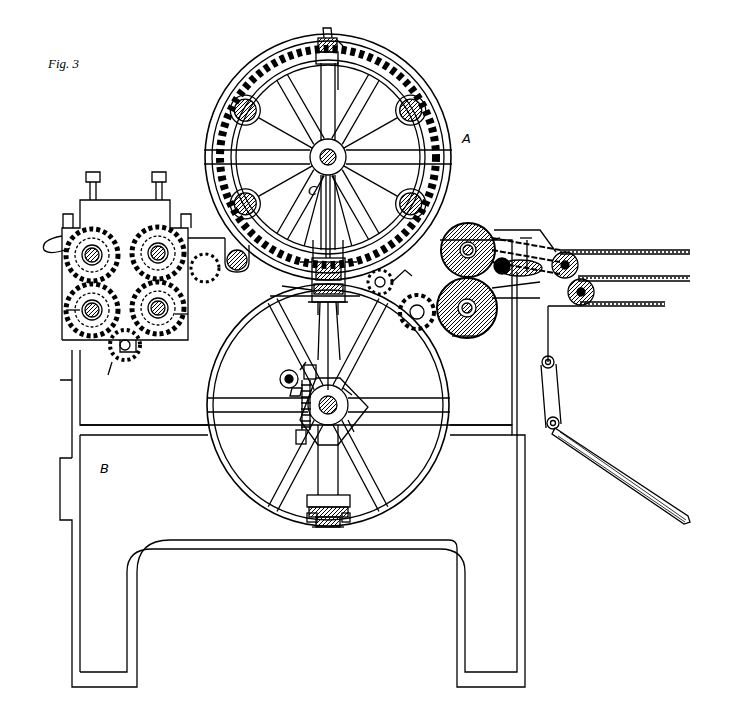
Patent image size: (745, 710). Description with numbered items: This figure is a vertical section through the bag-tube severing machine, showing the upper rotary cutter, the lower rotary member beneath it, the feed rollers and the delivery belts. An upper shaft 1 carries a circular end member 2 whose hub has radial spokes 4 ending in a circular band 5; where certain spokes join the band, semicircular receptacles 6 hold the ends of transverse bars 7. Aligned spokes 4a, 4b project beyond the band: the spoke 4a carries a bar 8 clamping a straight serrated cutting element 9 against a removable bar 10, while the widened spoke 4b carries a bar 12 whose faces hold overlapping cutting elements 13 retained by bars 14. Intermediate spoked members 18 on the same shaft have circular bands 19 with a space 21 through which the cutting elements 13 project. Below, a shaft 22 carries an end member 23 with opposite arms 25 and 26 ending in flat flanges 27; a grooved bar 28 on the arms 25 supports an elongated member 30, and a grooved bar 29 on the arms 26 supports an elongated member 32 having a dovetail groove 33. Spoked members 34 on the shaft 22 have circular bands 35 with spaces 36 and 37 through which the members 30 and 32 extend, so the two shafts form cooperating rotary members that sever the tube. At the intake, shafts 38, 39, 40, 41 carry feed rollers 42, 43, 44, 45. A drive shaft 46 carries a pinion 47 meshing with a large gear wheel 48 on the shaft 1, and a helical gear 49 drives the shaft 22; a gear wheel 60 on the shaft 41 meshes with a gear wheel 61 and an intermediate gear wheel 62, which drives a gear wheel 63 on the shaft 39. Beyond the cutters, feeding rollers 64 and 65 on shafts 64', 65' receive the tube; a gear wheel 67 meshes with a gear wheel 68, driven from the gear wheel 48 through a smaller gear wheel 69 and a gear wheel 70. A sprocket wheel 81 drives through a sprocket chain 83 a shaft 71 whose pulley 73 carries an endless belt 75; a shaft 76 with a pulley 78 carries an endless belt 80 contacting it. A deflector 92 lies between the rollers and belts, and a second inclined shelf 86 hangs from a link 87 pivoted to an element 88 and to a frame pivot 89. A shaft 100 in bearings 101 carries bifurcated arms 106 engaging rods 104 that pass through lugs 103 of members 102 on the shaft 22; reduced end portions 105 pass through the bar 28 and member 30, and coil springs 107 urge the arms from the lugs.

The shaft 1 is at (324, 150).
The circular end member 2 is at (316, 82).
The radial spokes 4 is at (327, 158).
The spoke 4a is at (330, 66).
The spoke 4b is at (328, 212).
The circular band 5 is at (340, 66).
The semicircular receptacles or pockets 6 is at (257, 104).
The bars 7 is at (248, 125).
The bar 8 is at (320, 38).
The cutting element 9 is at (327, 30).
The removable bar 10 is at (334, 38).
The bar 12 is at (328, 218).
The cutting elements 13 is at (312, 268).
The bars 14 is at (329, 210).
The members 18 is at (371, 70).
The circular band 19 is at (378, 60).
The space 21 is at (392, 275).
The shaft 22 is at (340, 405).
The end member 23 is at (338, 485).
The arm 25 is at (318, 352).
The arm 26 is at (325, 466).
The flat flange 27 is at (300, 324).
The bar 28 is at (290, 310).
The bar 29 is at (346, 524).
The elongated member 30 is at (285, 286).
The elongated member 32 is at (322, 528).
The groove 33 is at (331, 530).
The members 34 is at (278, 497).
The circular band 35 is at (250, 486).
The spaces 36 is at (352, 320).
The spaces 37 is at (310, 523).
The shaft 38 is at (90, 256).
The shaft 39 is at (90, 312).
The shaft 40 is at (158, 250).
The shaft 41 is at (160, 306).
The feed rollers 42 is at (76, 255).
The feed rollers 43 is at (66, 310).
The feed rollers 44 is at (160, 225).
The feed rollers 45 is at (191, 311).
The drive shaft 46 is at (234, 272).
The pinion 47 is at (204, 268).
The gear wheel 48 is at (432, 133).
The helical gear 49 is at (437, 58).
The gear wheel 60 is at (160, 338).
The gear wheel 61 is at (150, 200).
The intermediate gear wheel 62 is at (108, 376).
The gear wheel 63 is at (62, 240).
The feeding roller 64 is at (526, 249).
The shaft 64' is at (509, 219).
The feeding roller 65 is at (473, 310).
The shaft 65' is at (480, 347).
The gear wheel 67 is at (462, 228).
The gear wheel 68 is at (520, 290).
The gear wheel 69 is at (426, 301).
The gear wheel 70 is at (399, 270).
The shaft 71 is at (578, 258).
The pulley 73 is at (590, 265).
The endless belt 75 is at (655, 248).
The shaft 76 is at (574, 306).
The pulley 78 is at (595, 291).
The endless belt 80 is at (666, 306).
The sprocket wheel 81 is at (505, 232).
The sprocket chain 83 is at (560, 252).
The second inclined shelf 86 is at (640, 480).
The link 87 is at (560, 405).
The element 88 is at (556, 432).
The pivot 89 is at (556, 364).
The deflector 92 is at (530, 262).
The shaft 100 is at (283, 372).
The bearings 101 is at (312, 360).
The members 102 is at (352, 420).
The lugs 103 is at (318, 371).
The rods 104 is at (348, 438).
The end portion of reduced diameter 105 is at (356, 372).
The arms 106 is at (290, 383).
The coil spring 107 is at (300, 404).